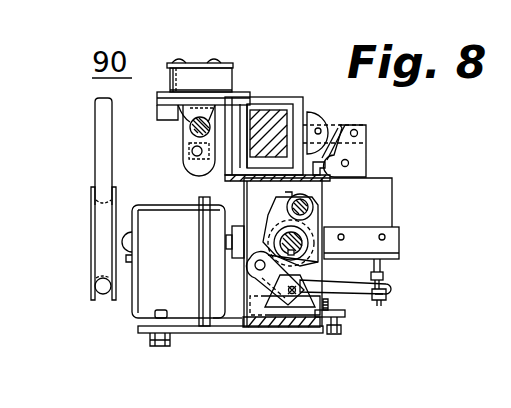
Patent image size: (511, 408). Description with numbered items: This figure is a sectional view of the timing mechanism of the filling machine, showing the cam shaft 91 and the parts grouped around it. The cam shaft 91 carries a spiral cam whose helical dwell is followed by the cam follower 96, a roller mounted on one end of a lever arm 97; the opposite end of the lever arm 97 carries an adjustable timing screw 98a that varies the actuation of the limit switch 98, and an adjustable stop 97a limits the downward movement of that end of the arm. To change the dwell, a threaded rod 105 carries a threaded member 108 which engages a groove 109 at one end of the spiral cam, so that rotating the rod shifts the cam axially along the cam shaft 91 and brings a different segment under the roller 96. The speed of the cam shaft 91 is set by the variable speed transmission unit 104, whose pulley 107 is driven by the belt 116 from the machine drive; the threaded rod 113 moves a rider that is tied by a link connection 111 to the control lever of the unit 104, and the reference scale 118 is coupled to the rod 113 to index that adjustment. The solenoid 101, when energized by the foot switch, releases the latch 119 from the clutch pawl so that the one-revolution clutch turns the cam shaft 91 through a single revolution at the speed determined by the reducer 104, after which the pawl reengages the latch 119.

The belt 116 is at (101, 124).
The pulley 107 is at (92, 214).
The variable speed transmission unit 104 is at (145, 305).
The link connection 111 is at (240, 228).
The solenoid 101 is at (278, 97).
The reference scale 118 is at (228, 76).
The threaded rod 113 is at (192, 130).
The latch 119 is at (366, 160).
The threaded member 108 is at (275, 222).
The threaded rod 105 is at (312, 204).
The cam shaft 91 is at (297, 241).
The groove 109 is at (305, 257).
The cam follower 96 is at (260, 275).
The lever arm 97 is at (345, 288).
The adjustable stop 97a is at (335, 328).
The limit switch 98 is at (400, 240).
The adjustable timing screw 98a is at (387, 300).